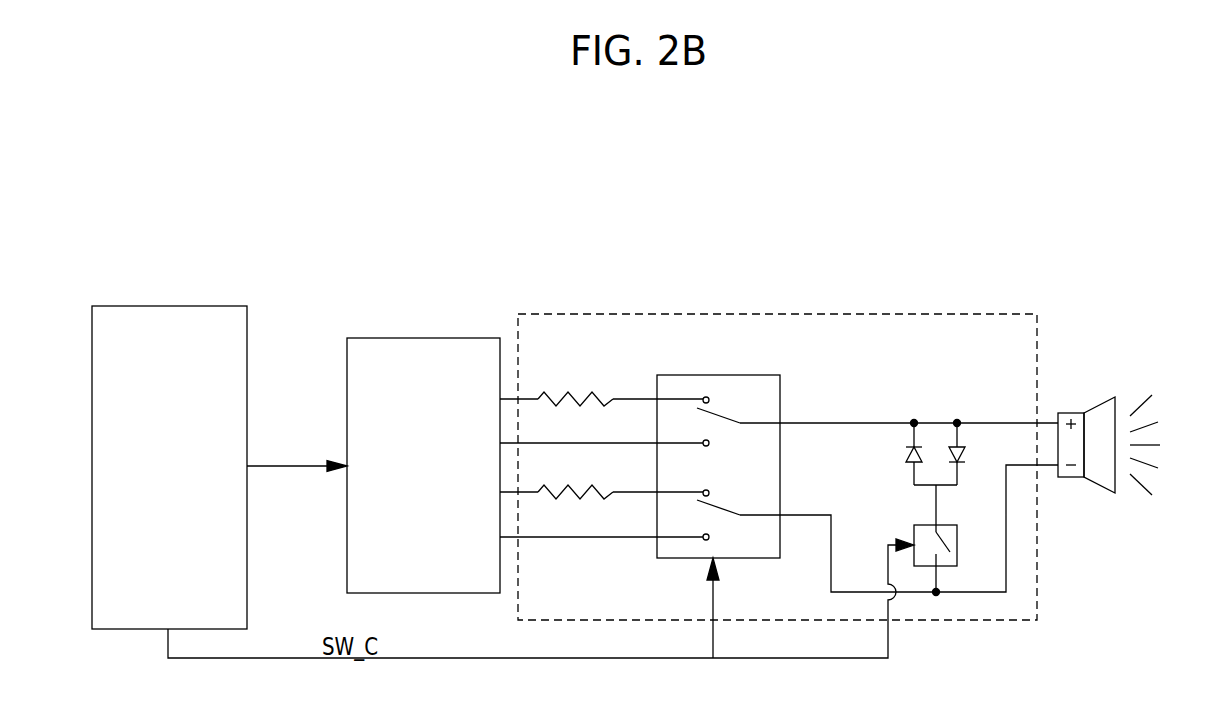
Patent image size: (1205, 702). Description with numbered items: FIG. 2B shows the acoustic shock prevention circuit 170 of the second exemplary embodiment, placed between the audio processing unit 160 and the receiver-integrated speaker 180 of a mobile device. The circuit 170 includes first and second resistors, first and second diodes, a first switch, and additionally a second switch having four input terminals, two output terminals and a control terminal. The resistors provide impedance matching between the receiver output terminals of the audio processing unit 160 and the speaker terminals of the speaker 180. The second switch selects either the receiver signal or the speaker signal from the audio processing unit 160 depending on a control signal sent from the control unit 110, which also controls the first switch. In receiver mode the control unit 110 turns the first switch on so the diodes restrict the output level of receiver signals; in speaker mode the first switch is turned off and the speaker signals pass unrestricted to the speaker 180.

The control unit 110 is at (208, 306).
The audio processing unit 160 is at (468, 338).
The acoustic shock prevention circuit 170 is at (910, 314).
The receiver-integrated speaker 180 is at (1115, 397).